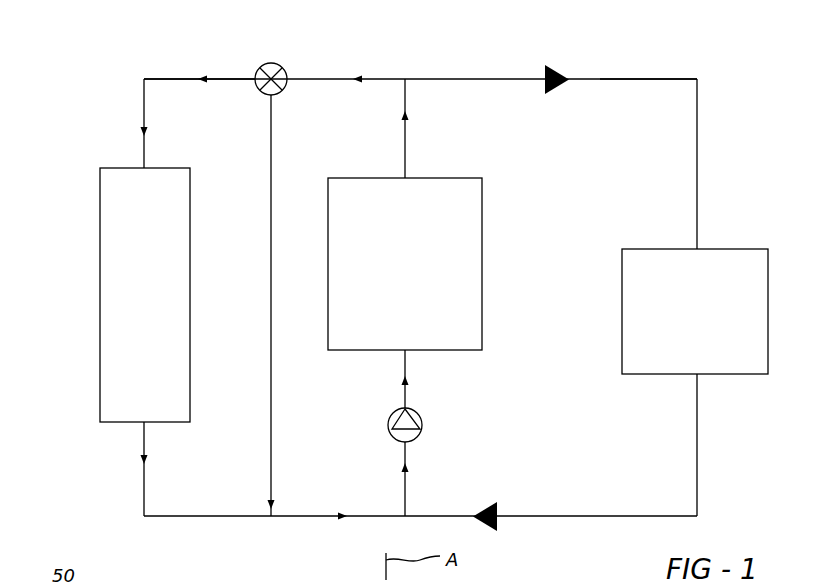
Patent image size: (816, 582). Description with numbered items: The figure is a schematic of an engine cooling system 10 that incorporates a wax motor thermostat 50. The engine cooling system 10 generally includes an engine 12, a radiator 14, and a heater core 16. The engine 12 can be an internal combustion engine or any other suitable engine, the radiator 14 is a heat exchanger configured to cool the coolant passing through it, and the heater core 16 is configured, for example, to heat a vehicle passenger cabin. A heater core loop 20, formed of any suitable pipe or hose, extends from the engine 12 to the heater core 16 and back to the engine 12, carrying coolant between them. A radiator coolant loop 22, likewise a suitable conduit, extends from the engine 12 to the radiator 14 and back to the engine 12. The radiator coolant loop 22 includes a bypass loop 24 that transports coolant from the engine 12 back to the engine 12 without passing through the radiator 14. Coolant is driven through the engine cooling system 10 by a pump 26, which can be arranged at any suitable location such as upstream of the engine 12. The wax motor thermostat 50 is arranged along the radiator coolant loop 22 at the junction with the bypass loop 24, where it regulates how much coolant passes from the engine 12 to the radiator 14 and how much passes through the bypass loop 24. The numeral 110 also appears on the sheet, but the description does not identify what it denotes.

The engine cooling system 10 is at (116, 45).
The engine 12 is at (482, 227).
The radiator 14 is at (100, 259).
The heater core 16 is at (730, 374).
The heater core loop 20 is at (657, 79).
The radiator coolant loop 22 is at (236, 79).
The bypass loop 24 is at (271, 327).
The pump 26 is at (422, 415).
The wax motor thermostat 50 is at (277, 66).
The valve assembly 110 is at (265, 573).